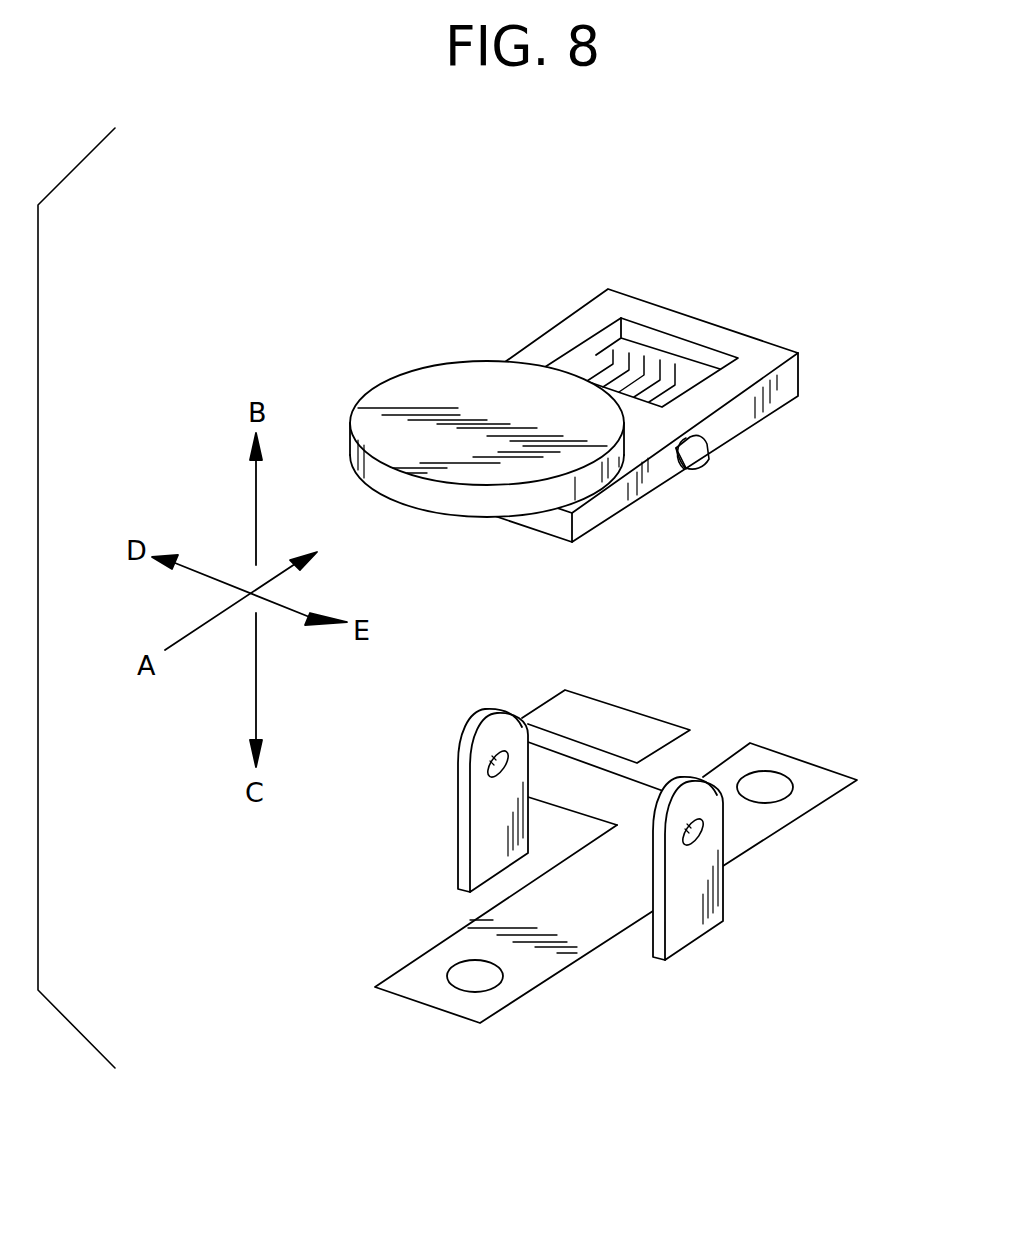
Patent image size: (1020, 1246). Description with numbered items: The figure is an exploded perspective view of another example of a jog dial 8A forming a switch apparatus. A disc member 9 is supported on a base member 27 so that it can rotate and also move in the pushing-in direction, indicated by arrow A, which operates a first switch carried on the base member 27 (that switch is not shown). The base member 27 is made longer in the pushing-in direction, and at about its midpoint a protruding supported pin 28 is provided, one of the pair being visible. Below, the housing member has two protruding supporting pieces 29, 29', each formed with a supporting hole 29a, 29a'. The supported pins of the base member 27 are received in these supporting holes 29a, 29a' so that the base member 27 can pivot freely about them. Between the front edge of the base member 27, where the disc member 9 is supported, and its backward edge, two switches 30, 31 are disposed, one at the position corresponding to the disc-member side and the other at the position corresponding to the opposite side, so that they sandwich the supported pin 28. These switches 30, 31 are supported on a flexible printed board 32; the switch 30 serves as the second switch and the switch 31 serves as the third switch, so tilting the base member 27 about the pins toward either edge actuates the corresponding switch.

The jog dial 8A is at (477, 300).
The disc member 9 is at (433, 400).
The base member 27 is at (796, 382).
The supported pin 28 is at (709, 458).
The protruding supporting piece 29 is at (445, 800).
The supporting hole 29a is at (483, 713).
The protruding supporting piece 29' is at (751, 868).
The supporting hole 29a' is at (769, 849).
The switch 30 is at (484, 977).
The switch 31 is at (768, 783).
The flexible printed board 32 is at (580, 925).